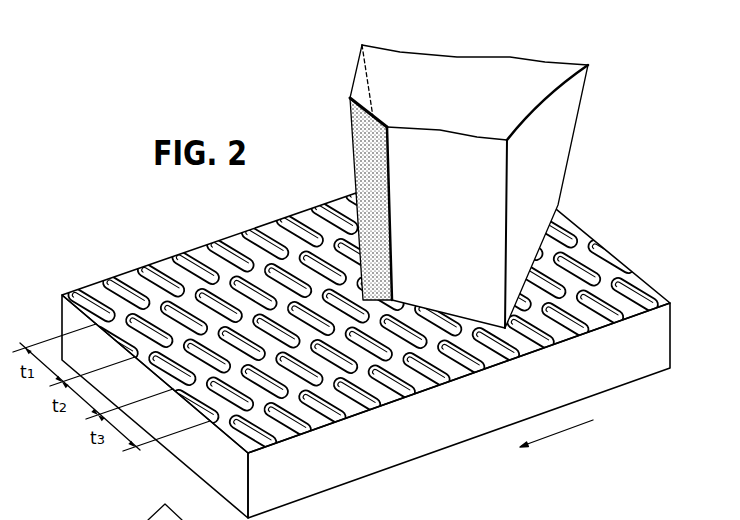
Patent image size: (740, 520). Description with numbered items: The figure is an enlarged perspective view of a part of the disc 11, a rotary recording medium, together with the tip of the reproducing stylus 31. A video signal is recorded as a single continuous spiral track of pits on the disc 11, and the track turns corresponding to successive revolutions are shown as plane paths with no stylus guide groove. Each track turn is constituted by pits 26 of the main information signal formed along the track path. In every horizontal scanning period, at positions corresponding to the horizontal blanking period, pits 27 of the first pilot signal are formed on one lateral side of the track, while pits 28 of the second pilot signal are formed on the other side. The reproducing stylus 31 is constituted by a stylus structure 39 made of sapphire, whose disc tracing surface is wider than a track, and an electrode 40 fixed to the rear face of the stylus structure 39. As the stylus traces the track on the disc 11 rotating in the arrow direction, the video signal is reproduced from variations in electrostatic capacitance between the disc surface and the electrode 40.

The disc 11 is at (137, 266).
The pits of the main information signal 26 is at (212, 250).
The pits of the first pilot signal 27 is at (265, 248).
The pits of the second pilot signal 28 is at (138, 352).
The reproducing stylus 31 is at (348, 97).
The stylus structure 39 is at (462, 186).
The electrode 40 is at (358, 137).